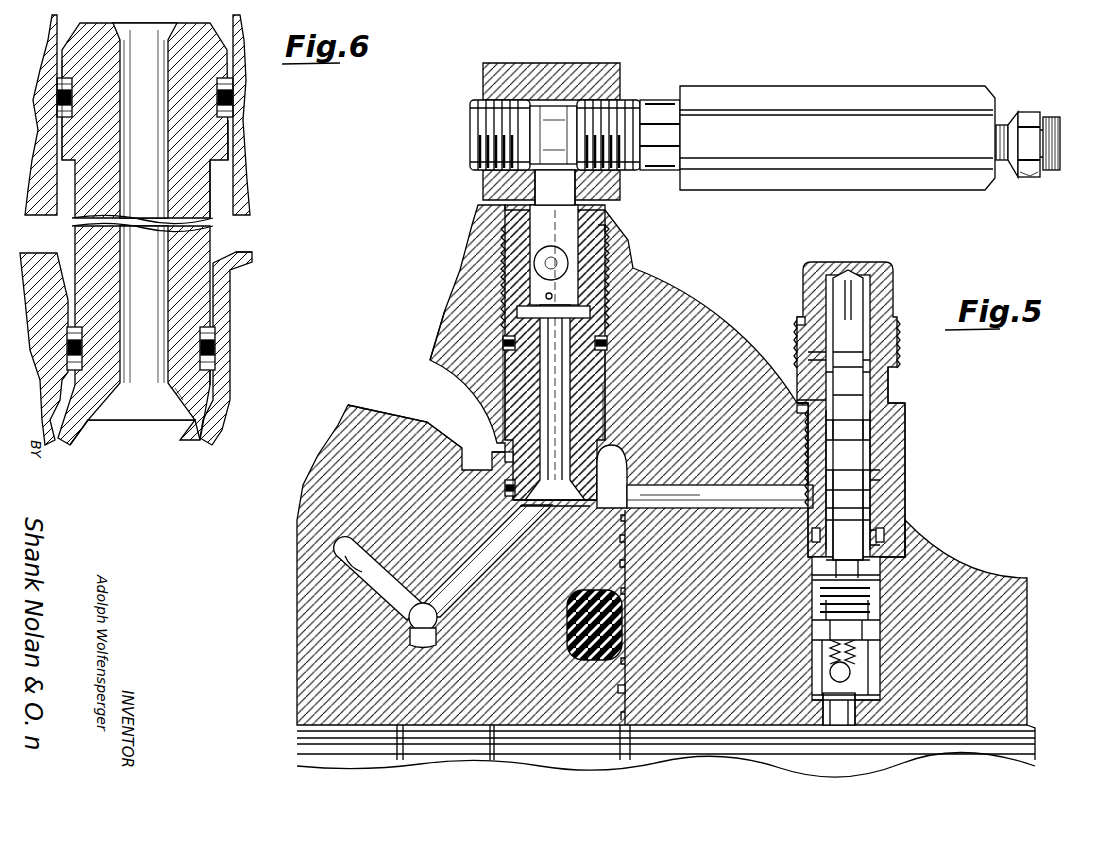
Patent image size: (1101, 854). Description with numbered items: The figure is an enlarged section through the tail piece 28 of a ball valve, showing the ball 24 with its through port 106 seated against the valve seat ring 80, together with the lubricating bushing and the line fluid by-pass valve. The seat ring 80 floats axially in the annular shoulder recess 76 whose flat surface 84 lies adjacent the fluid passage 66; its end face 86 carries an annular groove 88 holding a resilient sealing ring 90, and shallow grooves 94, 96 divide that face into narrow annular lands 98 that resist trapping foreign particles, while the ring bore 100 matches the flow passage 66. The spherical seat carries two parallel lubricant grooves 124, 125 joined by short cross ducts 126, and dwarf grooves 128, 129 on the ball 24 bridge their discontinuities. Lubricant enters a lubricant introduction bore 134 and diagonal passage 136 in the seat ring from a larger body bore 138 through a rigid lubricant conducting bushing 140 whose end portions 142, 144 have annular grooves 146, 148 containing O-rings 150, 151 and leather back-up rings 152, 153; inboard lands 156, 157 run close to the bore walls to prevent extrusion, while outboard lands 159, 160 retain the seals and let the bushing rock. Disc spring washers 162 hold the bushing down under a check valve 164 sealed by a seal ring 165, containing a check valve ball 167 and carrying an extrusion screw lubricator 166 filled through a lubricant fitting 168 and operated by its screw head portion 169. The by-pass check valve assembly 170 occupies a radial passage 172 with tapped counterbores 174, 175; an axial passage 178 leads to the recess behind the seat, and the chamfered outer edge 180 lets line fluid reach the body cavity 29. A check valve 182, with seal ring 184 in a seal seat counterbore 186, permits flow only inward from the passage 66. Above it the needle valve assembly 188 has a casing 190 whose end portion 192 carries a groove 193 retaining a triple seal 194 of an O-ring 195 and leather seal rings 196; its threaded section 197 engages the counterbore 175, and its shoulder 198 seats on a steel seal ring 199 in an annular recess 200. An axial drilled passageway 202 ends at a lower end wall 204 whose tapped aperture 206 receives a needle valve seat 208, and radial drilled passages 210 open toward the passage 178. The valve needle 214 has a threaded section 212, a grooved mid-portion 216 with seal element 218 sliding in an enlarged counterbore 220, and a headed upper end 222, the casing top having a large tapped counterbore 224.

In FIG. 5, the ball 24 is at (345, 742).
In FIG. 5, the tail piece 28 is at (672, 292).
In FIG. 5, the body cavity 29 is at (388, 372).
In FIG. 5, the fluid passage 66 is at (716, 728).
In FIG. 5, the annular shoulder recess 76 is at (588, 450).
In FIG. 5, the valve seat ring 80 is at (390, 420).
In FIG. 5, the flat surface 84 is at (627, 542).
In FIG. 5, the end face 86 is at (627, 716).
In FIG. 5, the annular groove 88 is at (572, 660).
In FIG. 5, the sealing ring 90 is at (616, 633).
In FIG. 5, the shallow groove 94 is at (627, 690).
In FIG. 5, the shallow groove 96 is at (627, 566).
In FIG. 5, the annular lands 98 is at (627, 522).
In FIG. 5, the bore 100 is at (560, 728).
In FIG. 5, the through port 106 is at (396, 740).
In FIG. 5, the lubricant groove 124 is at (434, 622).
In FIG. 5, the lubricant groove 125 is at (356, 540).
In FIG. 5, the cross duct 126 is at (395, 572).
In FIG. 5, the dwarf groove 128 is at (424, 643).
In FIG. 5, the dwarf groove 129 is at (352, 566).
In FIG. 5, the lubricant introduction bore 134 is at (503, 440).
In FIG. 6, the lubricant introduction bore 134 is at (232, 285).
In FIG. 5, the diagonal passage 136 is at (530, 522).
In FIG. 6, the diagonal passage 136 is at (88, 440).
In FIG. 5, the body bore 138 is at (606, 384).
In FIG. 6, the body bore 138 is at (235, 157).
In FIG. 5, the lubricant conducting bushing 140 is at (500, 403).
In FIG. 6, the lubricant conducting bushing 140 is at (205, 205).
In FIG. 5, the cylindrical end portion 142 is at (597, 482).
In FIG. 6, the cylindrical end portion 142 is at (208, 390).
In FIG. 5, the cylindrical end portion 144 is at (582, 318).
In FIG. 6, the cylindrical end portion 144 is at (225, 48).
In FIG. 5, the annular groove 146 is at (597, 494).
In FIG. 6, the annular groove 146 is at (210, 372).
In FIG. 5, the annular groove 148 is at (606, 342).
In FIG. 6, the annular groove 148 is at (235, 122).
In FIG. 5, the O-ring 150 is at (513, 496).
In FIG. 6, the O-ring 150 is at (215, 345).
In FIG. 5, the O-ring 151 is at (504, 341).
In FIG. 6, the O-ring 151 is at (240, 105).
In FIG. 5, the leather back-up ring 152 is at (512, 485).
In FIG. 6, the leather back-up ring 152 is at (215, 356).
In FIG. 5, the leather back-up ring 153 is at (510, 369).
In FIG. 6, the leather back-up ring 153 is at (214, 88).
In FIG. 5, the inboard land 156 is at (505, 460).
In FIG. 6, the inboard land 156 is at (68, 320).
In FIG. 5, the inboard land 157 is at (607, 352).
In FIG. 6, the inboard land 157 is at (60, 130).
In FIG. 6, the outboard land 159 is at (62, 385).
In FIG. 6, the outboard land 160 is at (60, 62).
In FIG. 5, the disc spring washer 162 is at (578, 306).
In FIG. 5, the check valve 164 is at (592, 200).
In FIG. 5, the seal ring 165 is at (603, 233).
In FIG. 5, the extrusion screw lubricator 166 is at (920, 182).
In FIG. 5, the check valve ball 167 is at (568, 266).
In FIG. 5, the lubricant fitting 168 is at (1046, 110).
In FIG. 5, the screw head portion 169 is at (1030, 168).
In FIG. 5, the by-pass check valve assembly 170 is at (916, 310).
In FIG. 5, the radial passage 172 is at (852, 703).
In FIG. 5, the tapped counterbore 174 is at (869, 601).
In FIG. 5, the tapped counterbore 175 is at (892, 452).
In FIG. 5, the axial passage 178 is at (735, 488).
In FIG. 5, the chamfered outer edge 180 is at (618, 466).
In FIG. 6, the chamfered outer edge 180 is at (248, 260).
In FIG. 5, the check valve 182 is at (815, 666).
In FIG. 5, the seal ring 184 is at (862, 680).
In FIG. 5, the seal seat counterbore 186 is at (822, 682).
In FIG. 5, the needle valve assembly 188 is at (898, 345).
In FIG. 5, the cylindrical casing 190 is at (890, 386).
In FIG. 5, the cylindrical end portion 192 is at (882, 542).
In FIG. 5, the external annular groove 193 is at (882, 527).
In FIG. 5, the triple seal 194 is at (888, 512).
In FIG. 5, the O-ring 195 is at (812, 546).
In FIG. 5, the leather seal rings 196 is at (812, 530).
In FIG. 5, the threaded section 197 is at (810, 440).
In FIG. 5, the shoulder 198 is at (906, 405).
In FIG. 5, the steel seal ring 199 is at (908, 426).
In FIG. 5, the annular recess 200 is at (797, 411).
In FIG. 5, the axial drilled passageway 202 is at (896, 477).
In FIG. 5, the lower end wall 204 is at (866, 562).
In FIG. 5, the tapped aperture 206 is at (830, 592).
In FIG. 5, the needle valve seat 208 is at (830, 580).
In FIG. 5, the radial drilled passages 210 is at (891, 487).
In FIG. 5, the threaded section 212 is at (815, 462).
In FIG. 5, the valve needle 214 is at (800, 497).
In FIG. 5, the grooved mid-portion 216 is at (882, 366).
In FIG. 5, the seal element 218 is at (800, 395).
In FIG. 5, the enlarged counterbore 220 is at (808, 356).
In FIG. 5, the upper end 222 is at (850, 275).
In FIG. 5, the tapped counterbore 224 is at (803, 320).